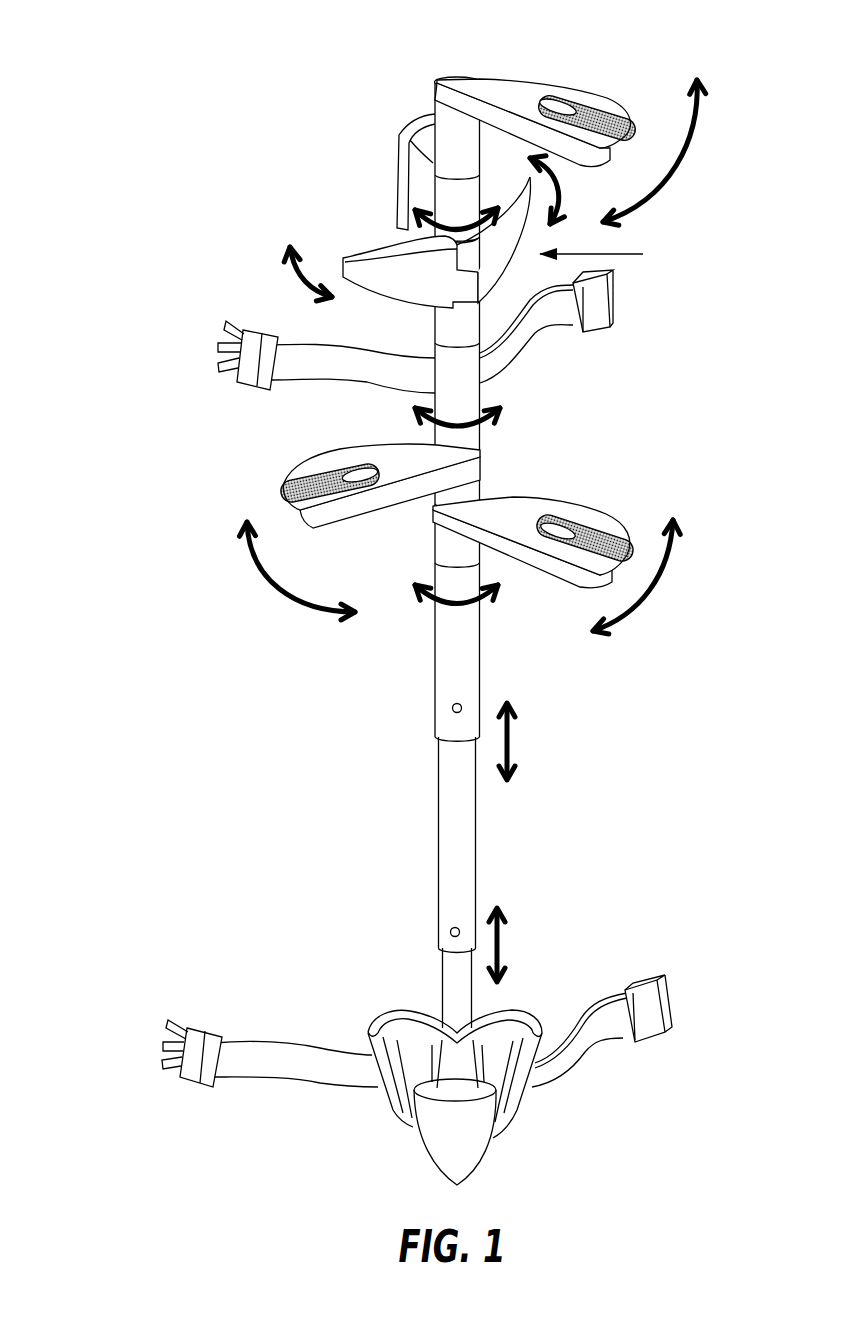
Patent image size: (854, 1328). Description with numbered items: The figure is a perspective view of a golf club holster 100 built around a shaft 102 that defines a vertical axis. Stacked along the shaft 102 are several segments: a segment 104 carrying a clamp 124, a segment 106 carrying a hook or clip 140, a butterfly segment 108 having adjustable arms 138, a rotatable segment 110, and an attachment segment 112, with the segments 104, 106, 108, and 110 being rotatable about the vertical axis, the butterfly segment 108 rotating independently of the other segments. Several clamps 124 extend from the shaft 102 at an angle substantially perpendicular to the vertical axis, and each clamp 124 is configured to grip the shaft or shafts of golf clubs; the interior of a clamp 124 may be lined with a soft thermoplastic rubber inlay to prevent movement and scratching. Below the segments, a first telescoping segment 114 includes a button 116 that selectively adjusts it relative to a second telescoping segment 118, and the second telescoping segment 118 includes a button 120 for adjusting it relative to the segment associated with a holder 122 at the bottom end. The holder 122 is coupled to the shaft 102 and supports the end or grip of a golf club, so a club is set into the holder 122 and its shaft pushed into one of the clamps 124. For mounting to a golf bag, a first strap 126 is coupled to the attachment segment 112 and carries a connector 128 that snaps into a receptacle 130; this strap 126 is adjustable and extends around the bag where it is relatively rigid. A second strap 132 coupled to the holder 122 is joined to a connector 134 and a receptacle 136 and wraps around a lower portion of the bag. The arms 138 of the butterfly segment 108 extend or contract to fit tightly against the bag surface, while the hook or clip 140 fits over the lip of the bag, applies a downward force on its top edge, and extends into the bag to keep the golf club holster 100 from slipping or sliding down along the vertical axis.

The golf club holster 100 is at (111, 34).
The shaft 102 is at (457, 80).
The segment 104 is at (452, 148).
The segment 106 is at (457, 203).
The butterfly segment 108 is at (547, 595).
The rotatable segment 110 is at (445, 323).
The attachment segment 112 is at (470, 370).
The first telescoping segment 114 is at (434, 662).
The button 116 is at (450, 707).
The second telescoping segment 118 is at (444, 813).
The button 120 is at (450, 930).
The holder 122 is at (384, 1012).
The clamp 124 is at (597, 93).
The strap 126 is at (307, 345).
The connector 128 is at (243, 380).
The receptacle 130 is at (612, 330).
The second strap 132 is at (300, 1042).
The connector 134 is at (208, 1028).
The receptacle 136 is at (648, 981).
The arms 138 is at (367, 253).
The hook or clip 140 is at (410, 128).